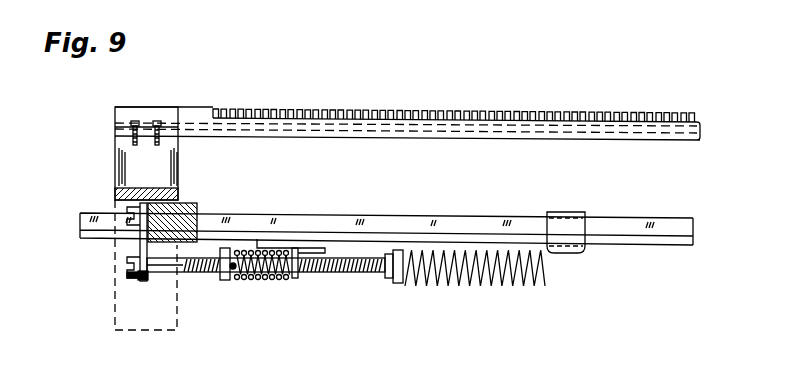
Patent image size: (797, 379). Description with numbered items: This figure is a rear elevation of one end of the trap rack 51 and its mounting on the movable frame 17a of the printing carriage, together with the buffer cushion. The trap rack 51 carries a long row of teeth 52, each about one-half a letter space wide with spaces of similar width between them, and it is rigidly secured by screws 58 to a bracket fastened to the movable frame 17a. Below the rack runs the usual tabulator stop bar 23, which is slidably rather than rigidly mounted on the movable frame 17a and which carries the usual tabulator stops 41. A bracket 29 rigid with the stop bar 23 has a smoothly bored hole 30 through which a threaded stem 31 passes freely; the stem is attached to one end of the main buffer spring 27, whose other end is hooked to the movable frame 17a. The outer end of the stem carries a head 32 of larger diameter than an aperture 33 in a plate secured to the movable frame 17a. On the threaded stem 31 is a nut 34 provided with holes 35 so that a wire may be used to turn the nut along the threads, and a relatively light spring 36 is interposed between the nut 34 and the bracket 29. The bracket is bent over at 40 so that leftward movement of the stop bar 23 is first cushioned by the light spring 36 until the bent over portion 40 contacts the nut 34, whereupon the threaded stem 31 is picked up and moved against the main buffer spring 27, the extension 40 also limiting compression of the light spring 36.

The screws 58 is at (140, 130).
The movable frame 17a is at (198, 207).
The teeth 52 is at (403, 110).
The trap rack 51 is at (405, 131).
The tabulator stop bar 23 is at (408, 230).
The tabulator stops 41 is at (566, 232).
The bent over portion 40 is at (277, 243).
The bored hole 30 is at (300, 256).
The bracket 29 is at (298, 282).
The threaded stem 31 is at (380, 275).
The buffer spring 27 is at (522, 285).
The light spring 36 is at (284, 278).
The nut 34 is at (136, 250).
The holes 35 is at (216, 282).
The head 32 is at (128, 270).
The aperture 33 is at (158, 281).